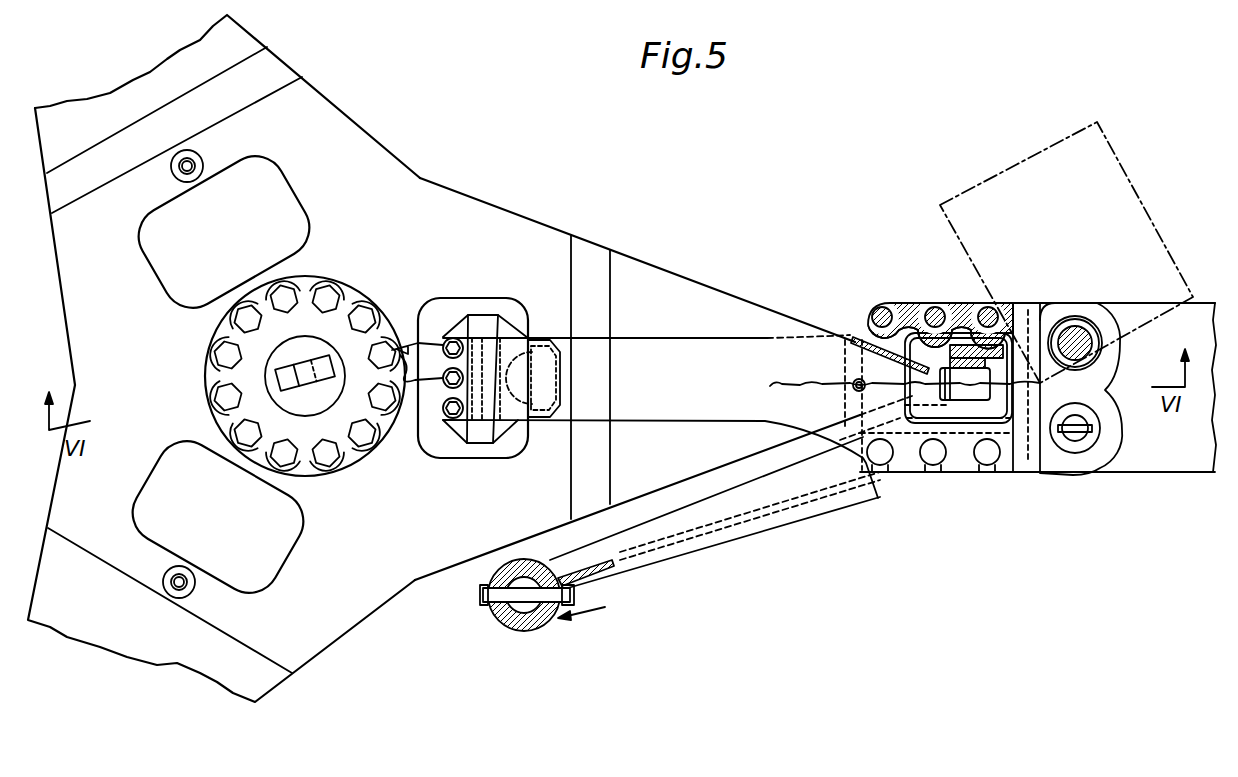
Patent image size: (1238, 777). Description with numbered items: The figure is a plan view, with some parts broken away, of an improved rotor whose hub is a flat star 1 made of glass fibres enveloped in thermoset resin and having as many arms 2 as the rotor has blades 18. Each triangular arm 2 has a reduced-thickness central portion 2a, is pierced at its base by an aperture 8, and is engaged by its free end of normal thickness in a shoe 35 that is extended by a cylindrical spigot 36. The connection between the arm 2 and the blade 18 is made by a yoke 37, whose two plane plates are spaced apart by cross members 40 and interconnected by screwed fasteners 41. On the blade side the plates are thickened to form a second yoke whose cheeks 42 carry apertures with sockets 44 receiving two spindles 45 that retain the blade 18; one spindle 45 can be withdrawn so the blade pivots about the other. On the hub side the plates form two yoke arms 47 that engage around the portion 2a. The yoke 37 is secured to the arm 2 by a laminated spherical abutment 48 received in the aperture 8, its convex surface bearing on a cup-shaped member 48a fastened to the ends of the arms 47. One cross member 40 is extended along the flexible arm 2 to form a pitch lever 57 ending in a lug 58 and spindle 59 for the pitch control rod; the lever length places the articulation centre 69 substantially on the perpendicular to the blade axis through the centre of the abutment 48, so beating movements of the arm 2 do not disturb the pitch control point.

The flat star 1 is at (443, 186).
The arm 2 is at (675, 275).
The reduced-thickness central portion 2a is at (722, 303).
The aperture 8 is at (446, 302).
The cup-shaped member 48a is at (481, 322).
The spherical abutment 48 is at (504, 332).
The yoke arms 47 is at (651, 338).
The yoke 37 is at (840, 325).
The shoe 35 is at (886, 350).
The cross members 40 is at (952, 306).
The cylindrical spigot 36 is at (968, 378).
The screwed fasteners 41 is at (930, 455).
The spindles 45 is at (1077, 333).
The sockets 44 is at (1103, 340).
The flanges or cheeks 42 is at (1110, 428).
The blade 18 is at (1137, 463).
The pitch lever 57 is at (774, 530).
The articulation centre 69 is at (540, 562).
The spindle 59 is at (480, 598).
The lug 58 is at (596, 605).